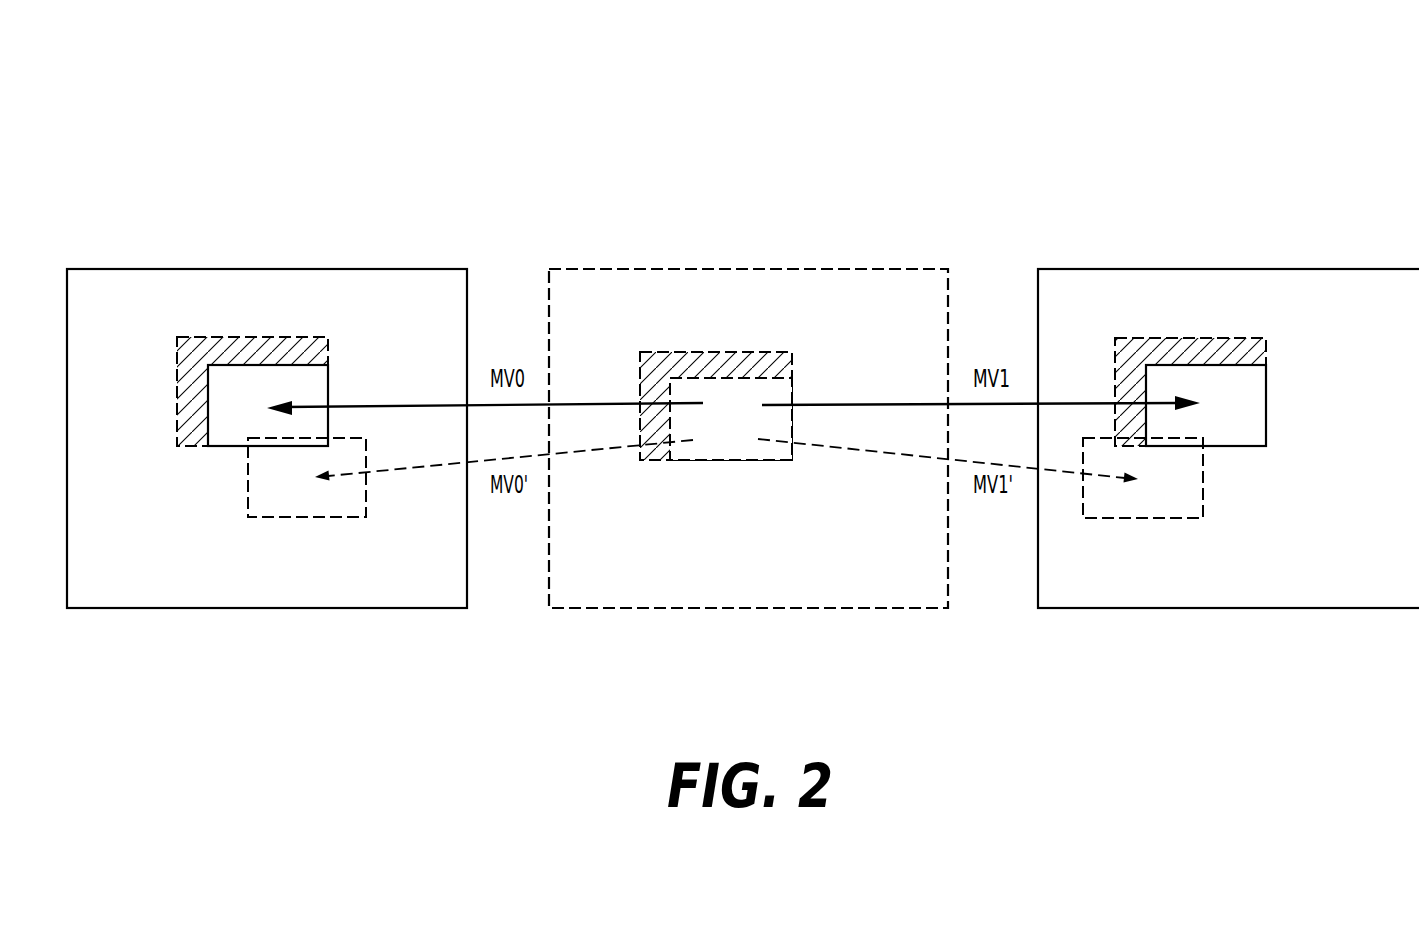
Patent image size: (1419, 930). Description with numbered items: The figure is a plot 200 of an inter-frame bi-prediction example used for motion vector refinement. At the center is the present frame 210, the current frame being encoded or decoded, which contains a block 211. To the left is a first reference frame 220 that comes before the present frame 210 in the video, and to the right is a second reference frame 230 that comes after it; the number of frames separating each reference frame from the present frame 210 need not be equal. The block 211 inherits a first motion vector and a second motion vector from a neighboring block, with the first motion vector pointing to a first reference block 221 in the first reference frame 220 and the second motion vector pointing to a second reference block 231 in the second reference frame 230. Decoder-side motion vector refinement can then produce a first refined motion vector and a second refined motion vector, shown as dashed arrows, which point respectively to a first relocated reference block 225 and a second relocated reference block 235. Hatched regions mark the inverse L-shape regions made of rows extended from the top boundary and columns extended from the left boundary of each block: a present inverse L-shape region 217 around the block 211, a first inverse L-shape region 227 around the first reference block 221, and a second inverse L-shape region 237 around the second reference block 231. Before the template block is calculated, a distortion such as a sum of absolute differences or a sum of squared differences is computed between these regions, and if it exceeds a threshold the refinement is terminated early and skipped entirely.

The plot 200 is at (1258, 99).
The present frame 210 is at (913, 314).
The block 211 is at (742, 429).
The present inverse L-shape region 217 is at (713, 352).
The first reference frame 220 is at (430, 314).
The first reference block 221 is at (280, 396).
The first relocated reference block 225 is at (313, 506).
The first inverse L-shape region 227 is at (207, 337).
The second reference frame 230 is at (1399, 314).
The second reference block 231 is at (1220, 396).
The second relocated reference block 235 is at (1177, 509).
The second inverse L-shape region 237 is at (1180, 338).